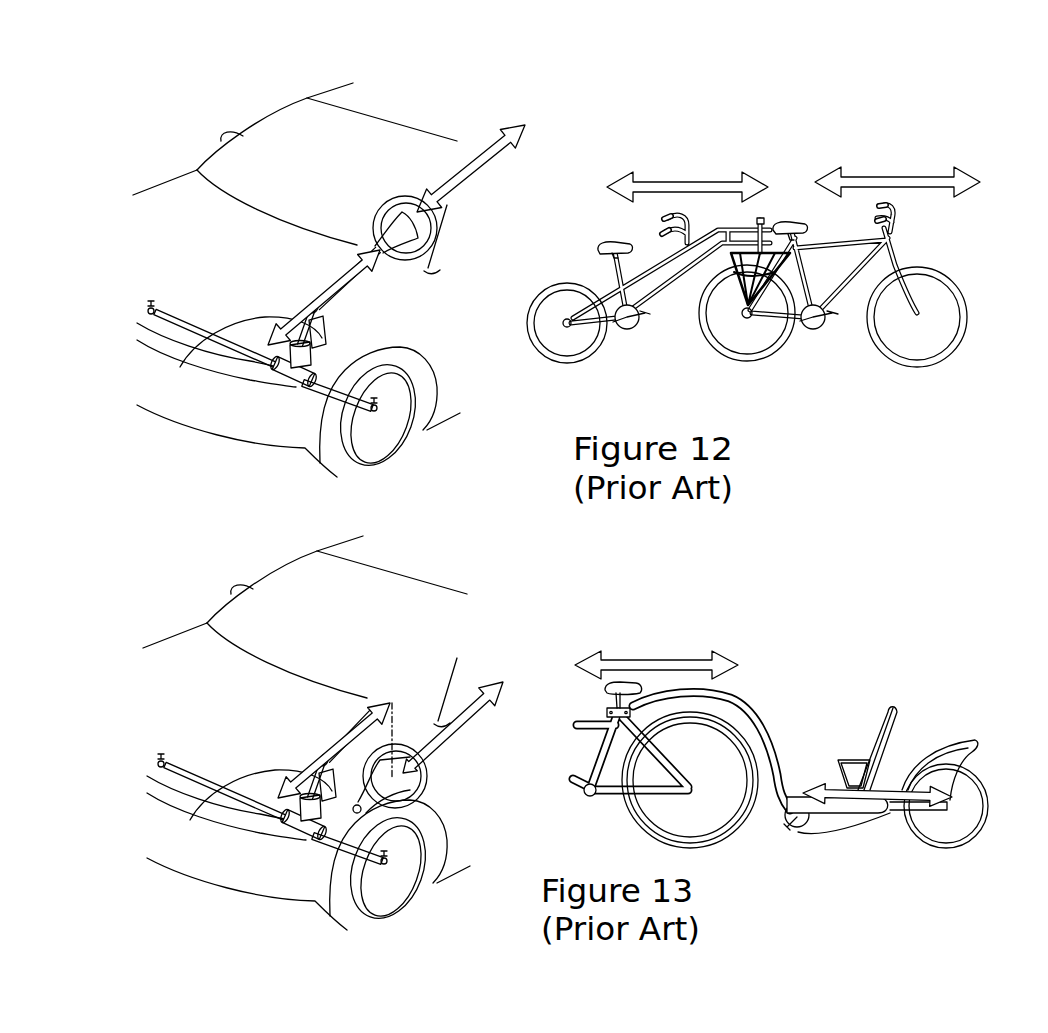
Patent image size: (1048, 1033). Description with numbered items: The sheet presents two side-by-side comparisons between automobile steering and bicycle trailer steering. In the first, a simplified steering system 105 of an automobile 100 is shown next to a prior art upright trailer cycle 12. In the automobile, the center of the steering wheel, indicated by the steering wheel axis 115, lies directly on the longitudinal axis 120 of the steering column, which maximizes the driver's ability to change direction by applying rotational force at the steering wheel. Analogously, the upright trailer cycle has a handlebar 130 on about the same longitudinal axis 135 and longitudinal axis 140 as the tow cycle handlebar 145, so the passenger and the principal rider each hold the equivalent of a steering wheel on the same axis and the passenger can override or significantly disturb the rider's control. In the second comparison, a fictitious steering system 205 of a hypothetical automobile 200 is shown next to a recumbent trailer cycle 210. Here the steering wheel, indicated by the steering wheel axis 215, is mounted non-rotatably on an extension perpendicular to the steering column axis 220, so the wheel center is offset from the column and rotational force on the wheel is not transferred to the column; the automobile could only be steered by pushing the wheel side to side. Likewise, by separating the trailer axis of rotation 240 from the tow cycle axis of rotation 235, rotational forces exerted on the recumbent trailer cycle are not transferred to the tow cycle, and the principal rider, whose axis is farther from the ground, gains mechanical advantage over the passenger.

In FIG. 12, the automobile 100 is at (168, 178).
In FIG. 12, the simplified steering system 105 is at (316, 196).
In FIG. 12, the steering wheel axis 115 is at (473, 170).
In FIG. 12, the longitudinal axis of the steering column 120 is at (289, 312).
In FIG. 12, the prior art upright trailer cycle 12 is at (648, 304).
In FIG. 12, the handlebar 130 is at (690, 233).
In FIG. 12, the longitudinal axis 135 is at (658, 173).
In FIG. 12, the longitudinal axis 140 is at (900, 183).
In FIG. 12, the tow cycle handlebar 145 is at (907, 215).
In FIG. 13, the automobile 200 is at (165, 635).
In FIG. 13, the fictitious steering system 205 is at (297, 680).
In FIG. 13, the steering wheel axis 215 is at (433, 707).
In FIG. 13, the steering column axis 220 is at (295, 765).
In FIG. 13, the recumbent trailer cycle 210 is at (843, 713).
In FIG. 13, the tow cycle axis of rotation 235 is at (925, 797).
In FIG. 13, the trailer axis of rotation 240 is at (648, 665).